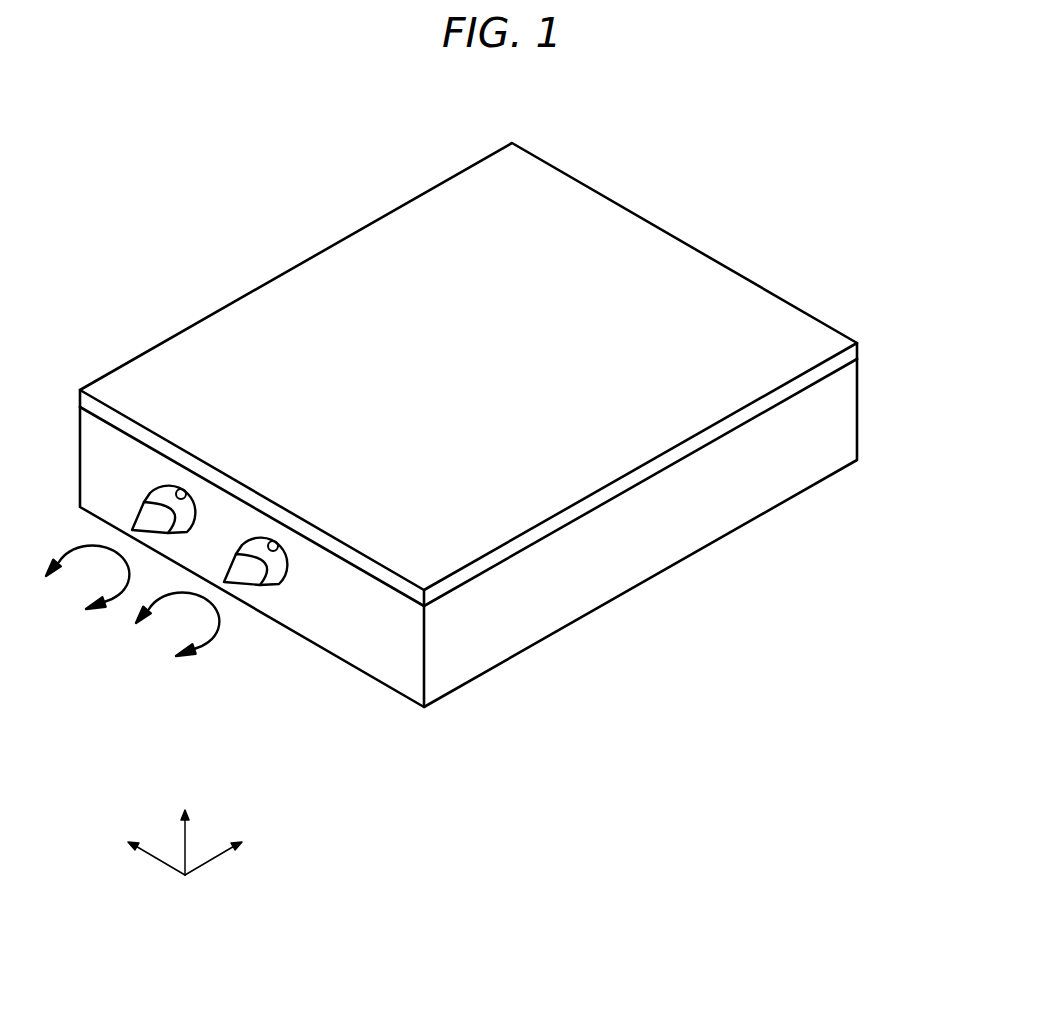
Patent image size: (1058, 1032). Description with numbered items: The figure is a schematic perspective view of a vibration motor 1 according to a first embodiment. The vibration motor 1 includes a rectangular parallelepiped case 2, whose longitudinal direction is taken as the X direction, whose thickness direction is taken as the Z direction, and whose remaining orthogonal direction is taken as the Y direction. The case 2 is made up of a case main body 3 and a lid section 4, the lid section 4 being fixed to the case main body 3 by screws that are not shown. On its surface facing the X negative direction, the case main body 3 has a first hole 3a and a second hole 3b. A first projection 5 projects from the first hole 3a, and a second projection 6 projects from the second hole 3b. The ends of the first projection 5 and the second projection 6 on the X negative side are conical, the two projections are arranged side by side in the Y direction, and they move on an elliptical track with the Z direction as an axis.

The vibration motor 1 is at (762, 136).
The case 2 is at (921, 308).
The case main body 3 is at (842, 397).
The first hole 3a is at (188, 498).
The second hole 3b is at (282, 552).
The lid section 4 is at (785, 326).
The first projection 5 is at (147, 518).
The second projection 6 is at (247, 576).